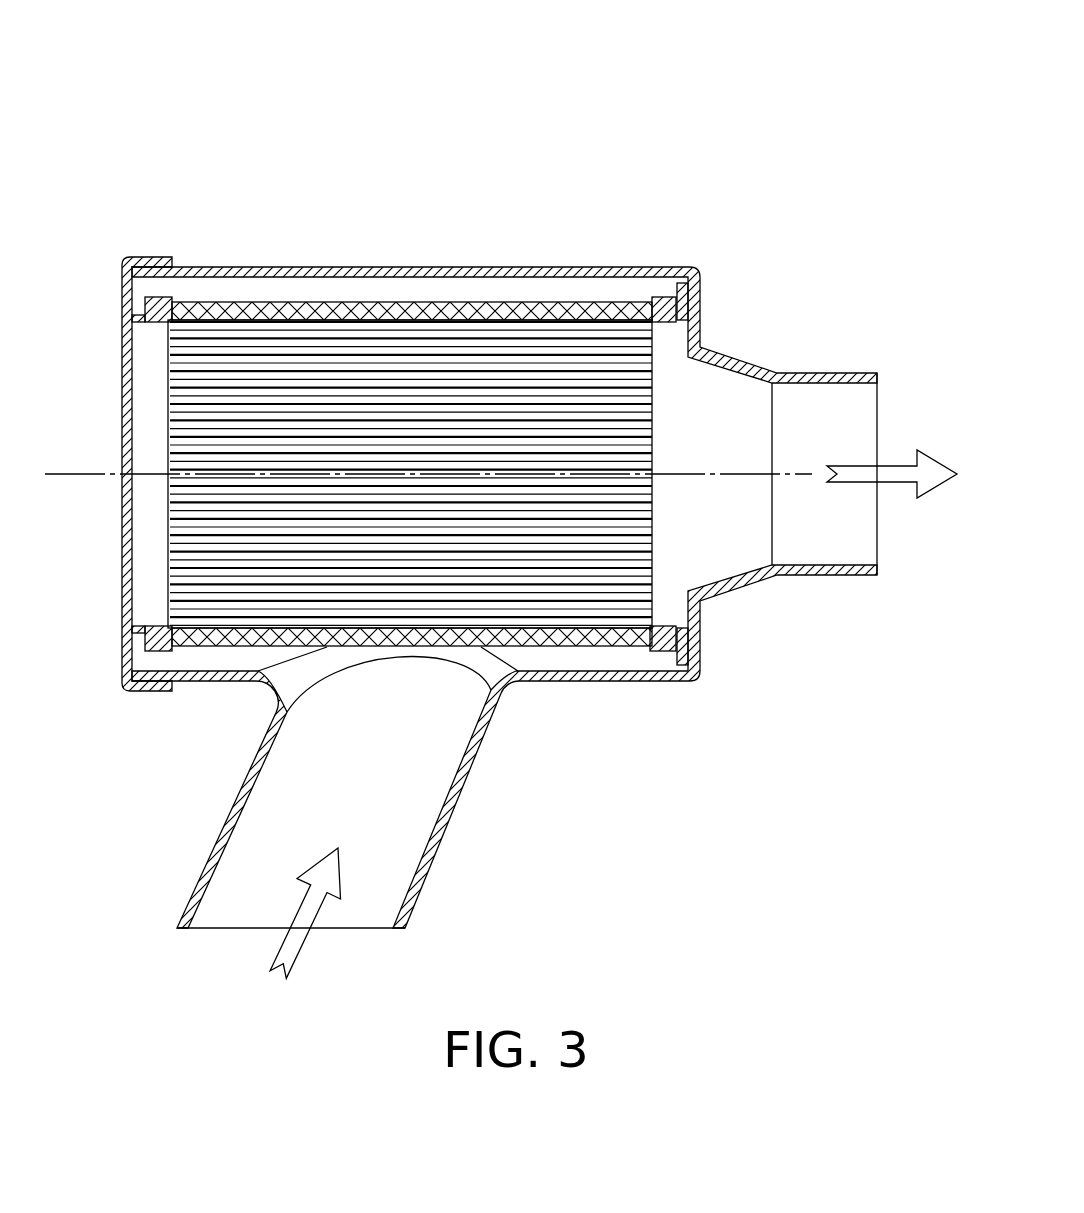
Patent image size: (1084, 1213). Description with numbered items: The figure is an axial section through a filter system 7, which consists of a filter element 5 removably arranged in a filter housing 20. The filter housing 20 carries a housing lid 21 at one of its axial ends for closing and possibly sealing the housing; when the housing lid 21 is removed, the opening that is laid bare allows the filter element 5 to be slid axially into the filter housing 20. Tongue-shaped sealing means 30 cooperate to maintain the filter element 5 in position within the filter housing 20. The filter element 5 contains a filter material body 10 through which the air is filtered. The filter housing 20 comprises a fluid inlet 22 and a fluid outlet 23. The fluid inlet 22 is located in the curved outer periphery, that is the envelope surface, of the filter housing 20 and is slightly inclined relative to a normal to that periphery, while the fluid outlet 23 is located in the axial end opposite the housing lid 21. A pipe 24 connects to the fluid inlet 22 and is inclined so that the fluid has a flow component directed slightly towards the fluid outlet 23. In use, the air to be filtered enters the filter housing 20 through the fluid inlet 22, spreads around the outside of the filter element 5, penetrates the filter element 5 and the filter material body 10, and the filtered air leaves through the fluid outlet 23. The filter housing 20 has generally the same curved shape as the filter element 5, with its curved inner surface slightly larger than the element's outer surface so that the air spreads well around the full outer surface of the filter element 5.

The filter system 7 is at (607, 120).
The filter element 5 is at (588, 282).
The filter housing 20 is at (395, 267).
The housing lid 21 is at (122, 317).
The filter material body 10 is at (493, 302).
The tongue-shaped sealing means 30 is at (142, 650).
The fluid inlet 22 is at (232, 918).
The fluid outlet 23 is at (860, 410).
The pipe 24 is at (487, 750).